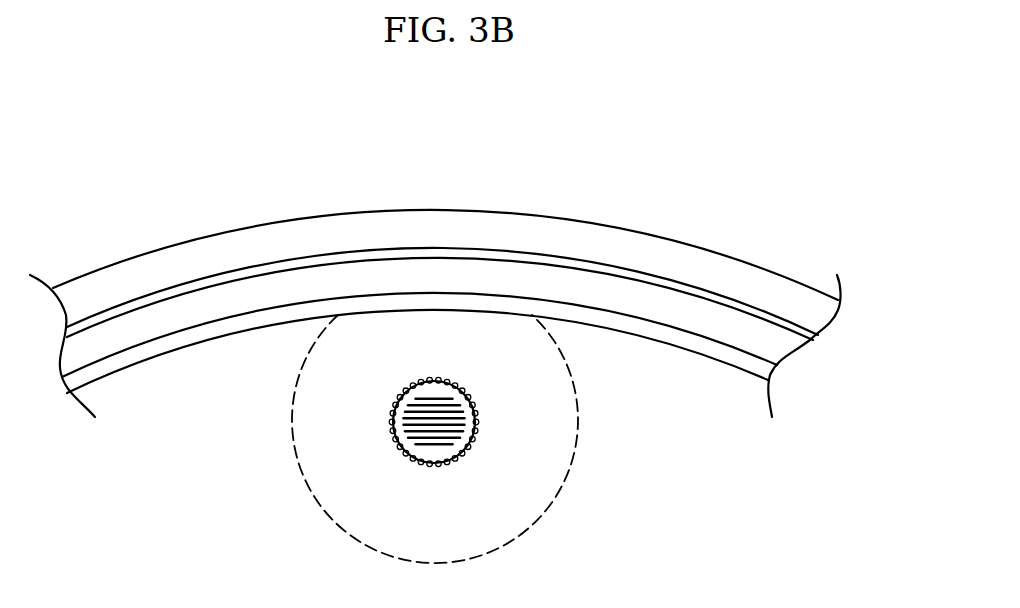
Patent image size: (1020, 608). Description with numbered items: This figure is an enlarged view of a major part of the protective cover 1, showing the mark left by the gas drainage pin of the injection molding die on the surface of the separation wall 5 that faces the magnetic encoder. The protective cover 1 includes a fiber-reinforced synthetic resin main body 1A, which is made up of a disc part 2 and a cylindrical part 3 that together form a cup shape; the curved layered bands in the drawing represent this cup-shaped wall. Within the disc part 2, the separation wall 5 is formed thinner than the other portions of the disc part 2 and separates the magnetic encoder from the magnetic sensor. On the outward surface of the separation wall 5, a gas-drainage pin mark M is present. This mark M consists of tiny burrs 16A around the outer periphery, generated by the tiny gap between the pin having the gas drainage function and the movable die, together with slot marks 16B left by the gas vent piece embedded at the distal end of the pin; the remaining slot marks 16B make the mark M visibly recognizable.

The protective cover 1 is at (435, 262).
The main body 1A is at (186, 343).
The disc part 2 is at (633, 368).
The cylindrical part 3 is at (497, 207).
The separation wall 5 is at (522, 515).
The tiny burrs 16A is at (478, 424).
The slot marks 16B is at (438, 447).
The gas-drainage pin mark M is at (568, 444).